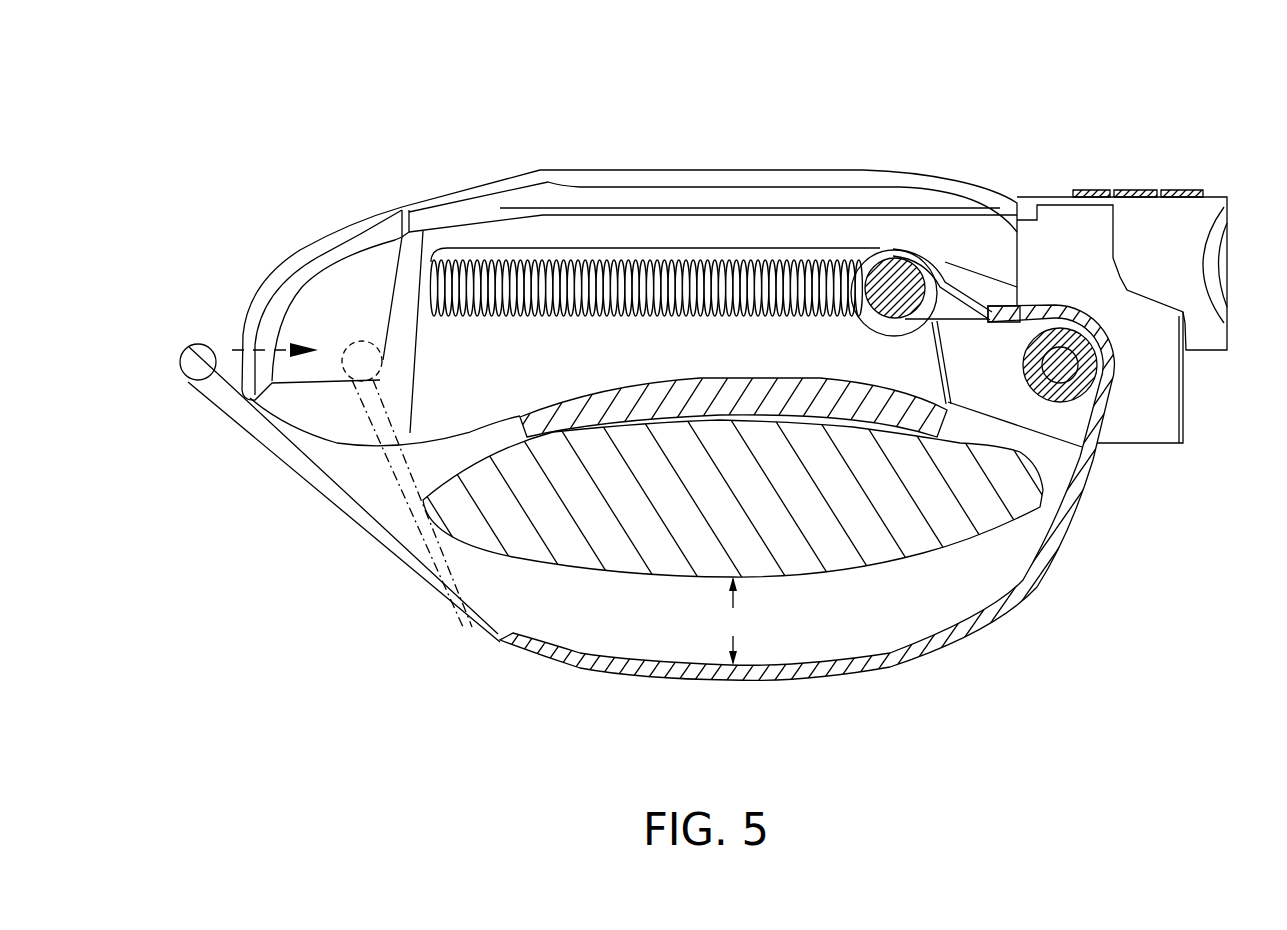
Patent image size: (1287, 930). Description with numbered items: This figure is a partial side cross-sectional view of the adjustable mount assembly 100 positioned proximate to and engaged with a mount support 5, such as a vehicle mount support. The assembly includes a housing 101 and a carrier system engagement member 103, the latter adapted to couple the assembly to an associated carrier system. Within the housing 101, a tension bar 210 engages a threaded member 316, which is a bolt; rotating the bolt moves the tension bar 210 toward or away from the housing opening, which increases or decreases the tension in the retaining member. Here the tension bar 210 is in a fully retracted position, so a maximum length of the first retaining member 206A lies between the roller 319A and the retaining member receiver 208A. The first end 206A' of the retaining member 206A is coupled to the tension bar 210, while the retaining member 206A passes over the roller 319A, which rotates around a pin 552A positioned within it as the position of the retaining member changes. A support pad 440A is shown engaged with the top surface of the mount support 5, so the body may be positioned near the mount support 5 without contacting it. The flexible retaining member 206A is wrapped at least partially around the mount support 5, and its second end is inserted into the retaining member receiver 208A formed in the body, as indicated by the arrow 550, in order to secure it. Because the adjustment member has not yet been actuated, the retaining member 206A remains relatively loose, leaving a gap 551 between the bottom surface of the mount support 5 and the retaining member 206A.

The adjustable mount assembly 100 is at (392, 125).
The housing 101 is at (481, 207).
The carrier system engagement member 103 is at (1175, 207).
The threaded member 316 is at (682, 275).
The tension bar 210 is at (895, 275).
The first end of the first retaining member 206A' is at (956, 232).
The retaining member receiver 208A is at (330, 400).
The first retaining member 206A is at (789, 503).
The gap 551 is at (736, 621).
The mount support 5 is at (850, 552).
The support pad 440A is at (933, 416).
The roller 319A is at (1085, 386).
The pin 552A is at (1070, 358).
The arrow 550 is at (222, 332).